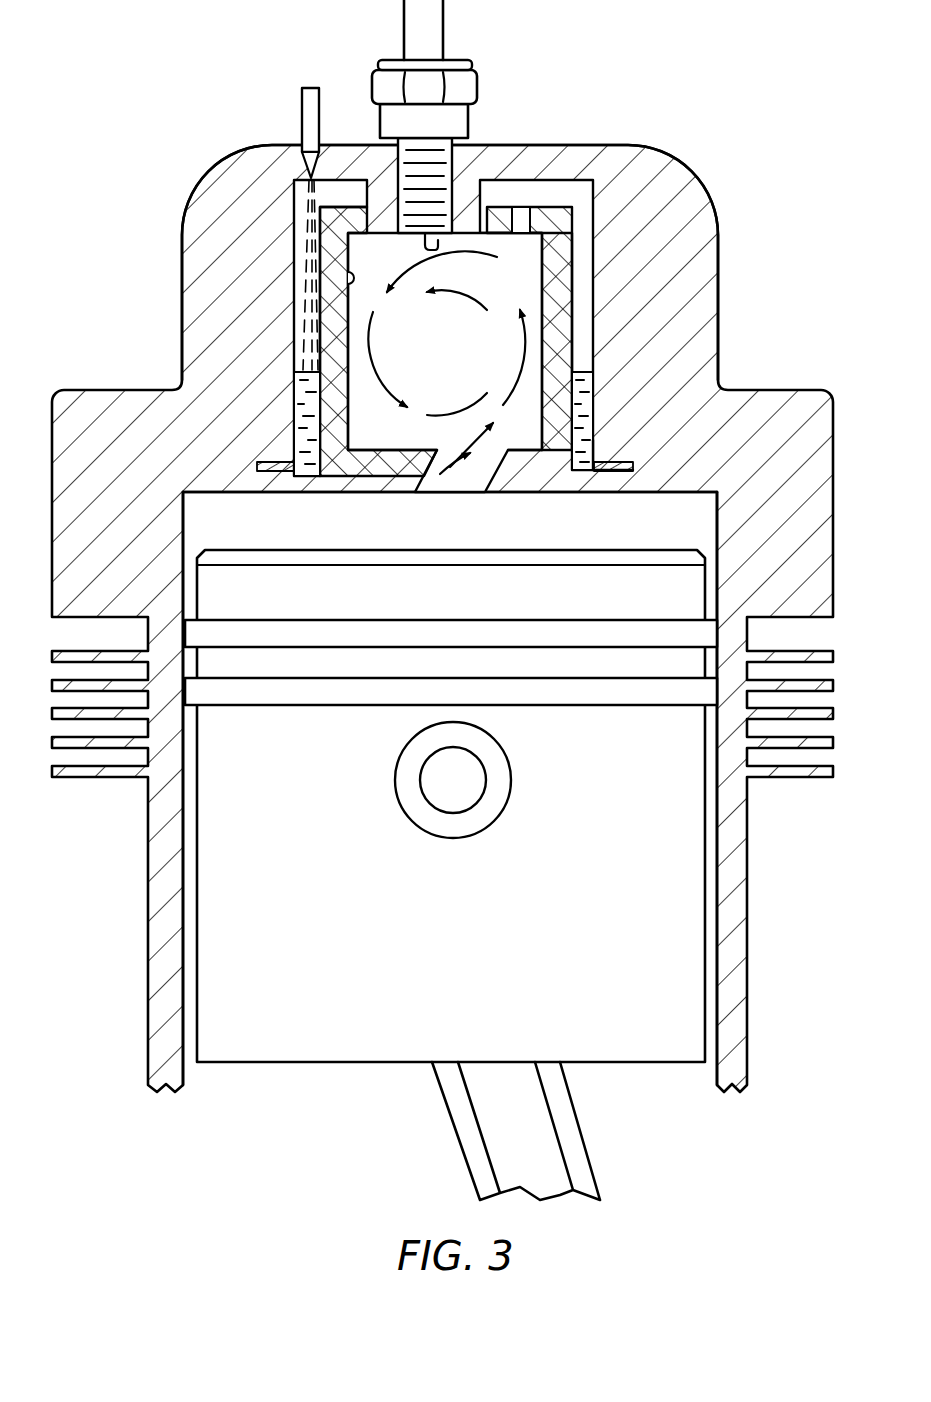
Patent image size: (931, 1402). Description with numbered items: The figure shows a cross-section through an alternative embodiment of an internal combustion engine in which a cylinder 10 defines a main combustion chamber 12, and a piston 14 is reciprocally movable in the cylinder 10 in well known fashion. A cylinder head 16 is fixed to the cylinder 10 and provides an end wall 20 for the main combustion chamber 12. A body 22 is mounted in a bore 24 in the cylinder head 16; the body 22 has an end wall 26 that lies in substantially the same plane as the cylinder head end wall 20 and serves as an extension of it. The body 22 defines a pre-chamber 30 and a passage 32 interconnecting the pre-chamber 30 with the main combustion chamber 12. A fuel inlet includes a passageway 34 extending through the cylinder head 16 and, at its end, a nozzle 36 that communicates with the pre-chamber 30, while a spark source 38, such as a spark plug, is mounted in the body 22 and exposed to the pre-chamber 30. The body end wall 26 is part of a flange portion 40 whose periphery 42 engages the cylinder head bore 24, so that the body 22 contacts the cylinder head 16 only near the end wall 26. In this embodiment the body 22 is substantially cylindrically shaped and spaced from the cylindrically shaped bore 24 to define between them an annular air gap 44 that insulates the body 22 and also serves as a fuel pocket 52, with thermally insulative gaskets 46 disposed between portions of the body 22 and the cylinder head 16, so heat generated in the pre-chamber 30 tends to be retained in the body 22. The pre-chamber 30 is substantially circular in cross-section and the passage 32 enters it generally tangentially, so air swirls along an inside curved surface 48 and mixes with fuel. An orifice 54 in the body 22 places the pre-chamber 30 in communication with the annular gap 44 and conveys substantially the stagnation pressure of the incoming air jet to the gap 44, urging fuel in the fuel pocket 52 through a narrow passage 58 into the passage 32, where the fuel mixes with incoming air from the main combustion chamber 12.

The cylinder 10 is at (150, 862).
The main combustion chamber 12 is at (194, 533).
The piston 14 is at (690, 855).
The cylinder head 16 is at (195, 208).
The end wall 20 is at (247, 496).
The body 22 is at (583, 237).
The bore 24 is at (583, 310).
The end wall 26 is at (574, 493).
The pre-chamber 30 is at (346, 278).
The passage 32 is at (427, 492).
The passageway 34 is at (300, 110).
The nozzle 36 is at (305, 166).
The spark source 38 is at (478, 80).
The flange portion 40 is at (580, 480).
The periphery 42 is at (650, 475).
The air gap 44 is at (308, 313).
The gaskets 46 is at (282, 462).
The inside curved surface 48 is at (545, 273).
The fuel pocket 52 is at (308, 352).
The orifice 54 is at (522, 212).
The narrow passage 58 is at (363, 472).